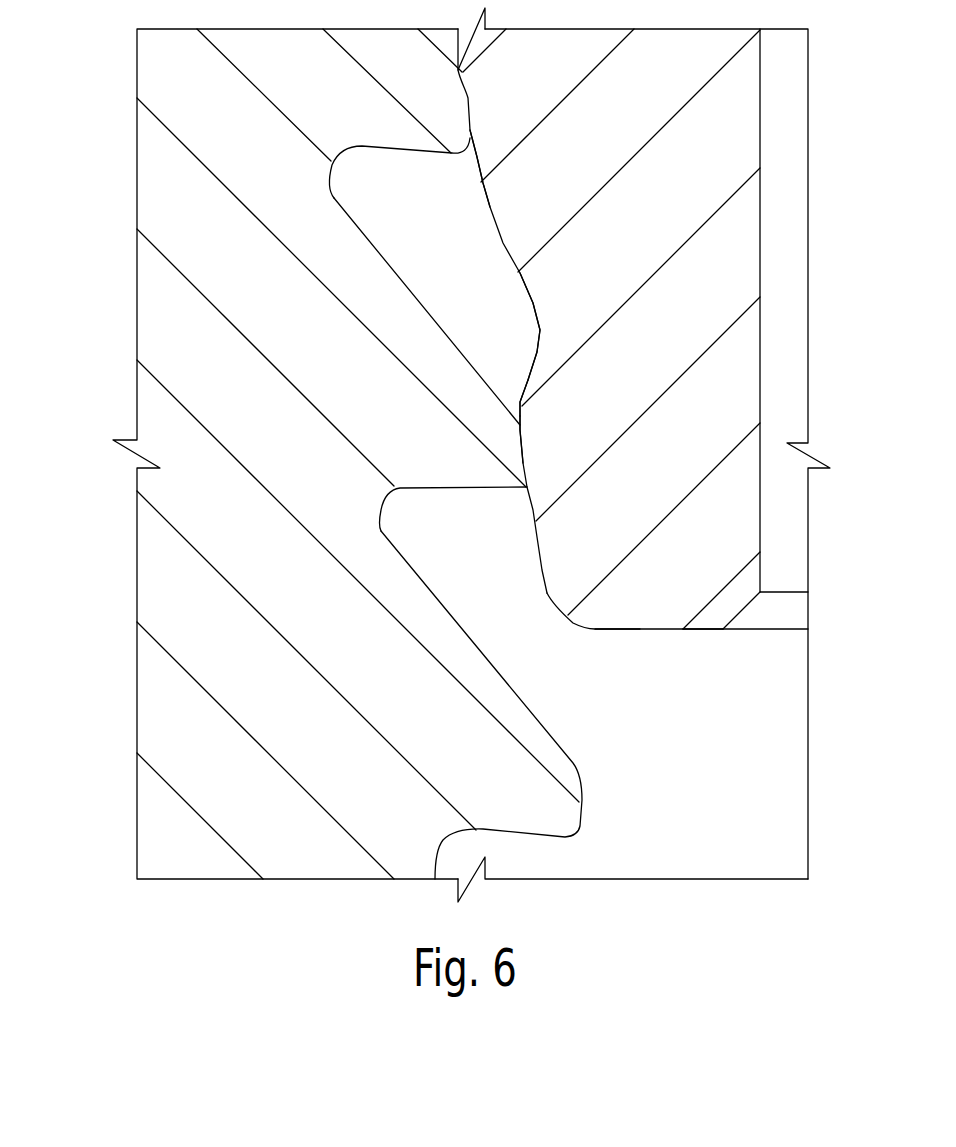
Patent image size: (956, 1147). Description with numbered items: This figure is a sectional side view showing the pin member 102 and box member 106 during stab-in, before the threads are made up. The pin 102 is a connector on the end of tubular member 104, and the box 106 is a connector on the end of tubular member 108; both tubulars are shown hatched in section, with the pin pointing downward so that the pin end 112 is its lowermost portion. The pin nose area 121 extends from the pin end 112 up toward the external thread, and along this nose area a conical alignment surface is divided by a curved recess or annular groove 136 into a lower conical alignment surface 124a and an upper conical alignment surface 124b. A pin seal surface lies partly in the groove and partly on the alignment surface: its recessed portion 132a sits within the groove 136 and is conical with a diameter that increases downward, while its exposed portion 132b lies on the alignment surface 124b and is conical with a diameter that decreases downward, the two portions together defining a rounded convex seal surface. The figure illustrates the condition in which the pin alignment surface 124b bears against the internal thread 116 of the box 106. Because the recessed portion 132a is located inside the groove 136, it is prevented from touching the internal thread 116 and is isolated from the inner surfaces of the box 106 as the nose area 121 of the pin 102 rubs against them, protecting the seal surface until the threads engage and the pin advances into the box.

The pin member 102 is at (621, 644).
The tubular member 104 is at (763, 200).
The box member 106 is at (128, 276).
The tubular member 108 is at (323, 847).
The pin end 112 is at (708, 632).
The internal thread 116 is at (397, 277).
The pin nose area 121 is at (462, 190).
The lower conical alignment surface 124a is at (487, 202).
The upper conical alignment surface 124b is at (537, 537).
The recessed portion of seal surface 132a is at (520, 402).
The exposed portion of seal surface 132b is at (520, 430).
The annular groove 136 is at (540, 327).